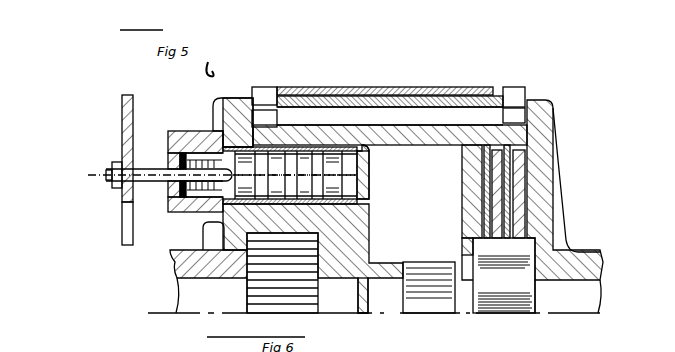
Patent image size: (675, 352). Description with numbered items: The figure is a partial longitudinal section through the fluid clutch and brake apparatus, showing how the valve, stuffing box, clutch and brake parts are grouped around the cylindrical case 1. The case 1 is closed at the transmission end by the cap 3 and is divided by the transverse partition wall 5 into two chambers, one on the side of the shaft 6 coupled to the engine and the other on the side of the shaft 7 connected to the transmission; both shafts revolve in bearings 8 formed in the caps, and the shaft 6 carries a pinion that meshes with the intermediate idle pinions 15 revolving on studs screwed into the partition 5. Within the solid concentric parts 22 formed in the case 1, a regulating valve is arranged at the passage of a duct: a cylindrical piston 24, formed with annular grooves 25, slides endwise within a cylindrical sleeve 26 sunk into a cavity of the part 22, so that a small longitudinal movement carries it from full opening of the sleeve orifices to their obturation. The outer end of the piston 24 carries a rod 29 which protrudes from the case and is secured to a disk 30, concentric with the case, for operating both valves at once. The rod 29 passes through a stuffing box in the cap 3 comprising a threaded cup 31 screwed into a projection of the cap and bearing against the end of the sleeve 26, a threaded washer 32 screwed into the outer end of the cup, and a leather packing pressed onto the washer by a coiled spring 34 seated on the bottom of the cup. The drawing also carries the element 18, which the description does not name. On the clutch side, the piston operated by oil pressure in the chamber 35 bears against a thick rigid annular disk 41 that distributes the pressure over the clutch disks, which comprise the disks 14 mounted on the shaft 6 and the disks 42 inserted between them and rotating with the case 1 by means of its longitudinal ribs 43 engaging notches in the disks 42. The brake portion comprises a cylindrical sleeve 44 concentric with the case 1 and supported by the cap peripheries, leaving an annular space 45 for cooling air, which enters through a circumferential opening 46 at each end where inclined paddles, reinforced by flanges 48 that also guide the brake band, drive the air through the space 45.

The cylindrical case 1 is at (450, 127).
The cap 3 is at (362, 312).
The transverse partition wall 5 is at (233, 103).
The shaft 6 is at (585, 292).
The shaft 7 is at (187, 290).
The bearings 8 is at (547, 118).
The clutch disks 14 is at (517, 203).
The intermediate idle pinions 15 is at (497, 255).
The support block 18 is at (428, 265).
The concentric parts 22 is at (300, 173).
The cylindrical piston 24 is at (265, 301).
The annular grooves 25 is at (313, 166).
The cylindrical sleeve 26 is at (367, 202).
The rod 29 is at (147, 179).
The disk 30 is at (121, 113).
The threaded cup 31 is at (193, 132).
The threaded washer 32 is at (168, 157).
The coiled spring 34 is at (197, 192).
The chamber 35 is at (167, 197).
The annular disk 41 is at (487, 148).
The annular disks 42 is at (498, 157).
The longitudinal ribs 43 is at (390, 92).
The cylindrical sleeve 44 is at (323, 100).
The annular space 45 is at (427, 115).
The circumferential opening 46 is at (512, 95).
The flanges 48 is at (270, 88).